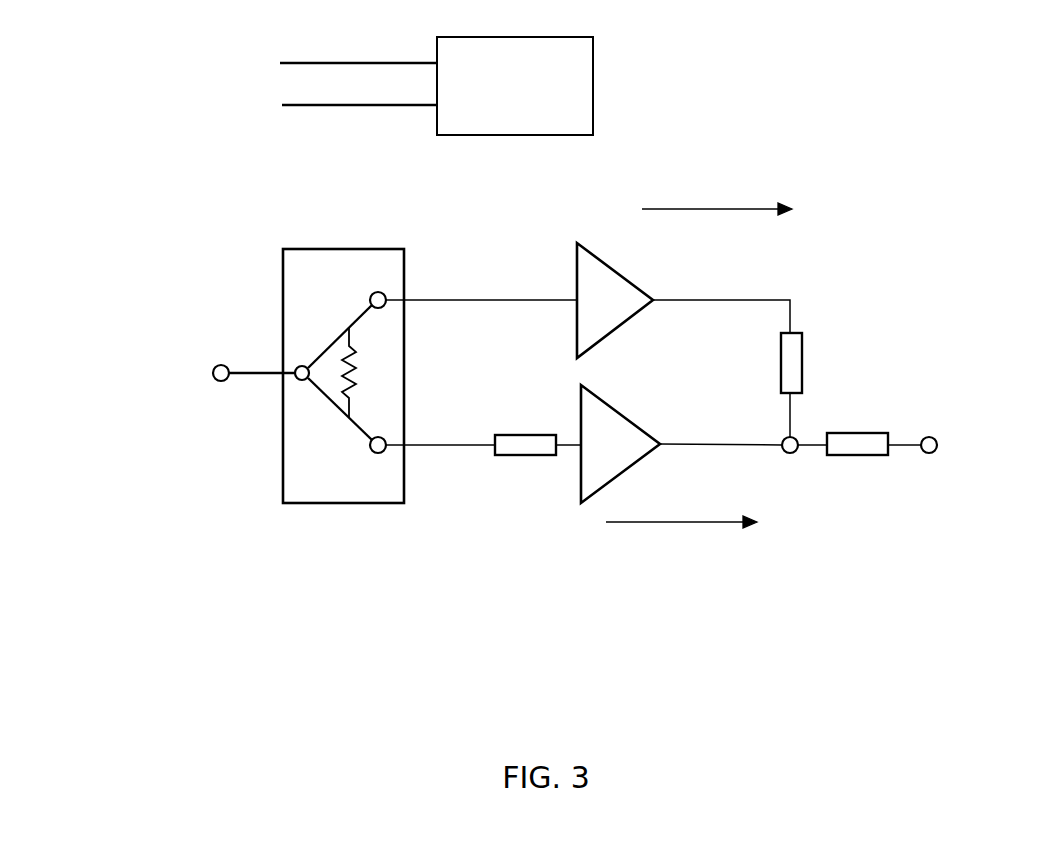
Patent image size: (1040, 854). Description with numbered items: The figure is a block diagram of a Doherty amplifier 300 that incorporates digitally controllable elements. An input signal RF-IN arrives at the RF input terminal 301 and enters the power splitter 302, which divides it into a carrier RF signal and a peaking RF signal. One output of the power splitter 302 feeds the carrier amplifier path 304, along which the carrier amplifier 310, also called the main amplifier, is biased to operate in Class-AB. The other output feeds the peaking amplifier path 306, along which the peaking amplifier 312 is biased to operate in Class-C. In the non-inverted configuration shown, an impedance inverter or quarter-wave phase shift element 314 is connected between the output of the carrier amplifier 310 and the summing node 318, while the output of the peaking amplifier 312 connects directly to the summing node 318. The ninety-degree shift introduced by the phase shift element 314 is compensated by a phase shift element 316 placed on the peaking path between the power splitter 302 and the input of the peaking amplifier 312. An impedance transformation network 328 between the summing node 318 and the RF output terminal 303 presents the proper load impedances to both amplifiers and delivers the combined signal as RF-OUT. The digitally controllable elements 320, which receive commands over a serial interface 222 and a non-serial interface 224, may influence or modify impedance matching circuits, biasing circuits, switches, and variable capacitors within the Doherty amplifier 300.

The Doherty amplifier 300 is at (872, 146).
The RF input terminal 301 is at (222, 365).
The power splitter 302 is at (339, 249).
The RF output terminal 303 is at (931, 437).
The carrier amplifier path 304 is at (706, 209).
The peaking amplifier path 306 is at (700, 522).
The carrier amplifier 310 is at (627, 281).
The peaking amplifier 312 is at (631, 422).
The phase shift element 314 is at (781, 385).
The phase shift element 316 is at (515, 435).
The summing node 318 is at (791, 453).
The digitally controllable elements 320 is at (513, 135).
The impedance transformation network 328 is at (848, 433).
The serial interface 222 is at (296, 105).
The non-serial interface 224 is at (337, 63).